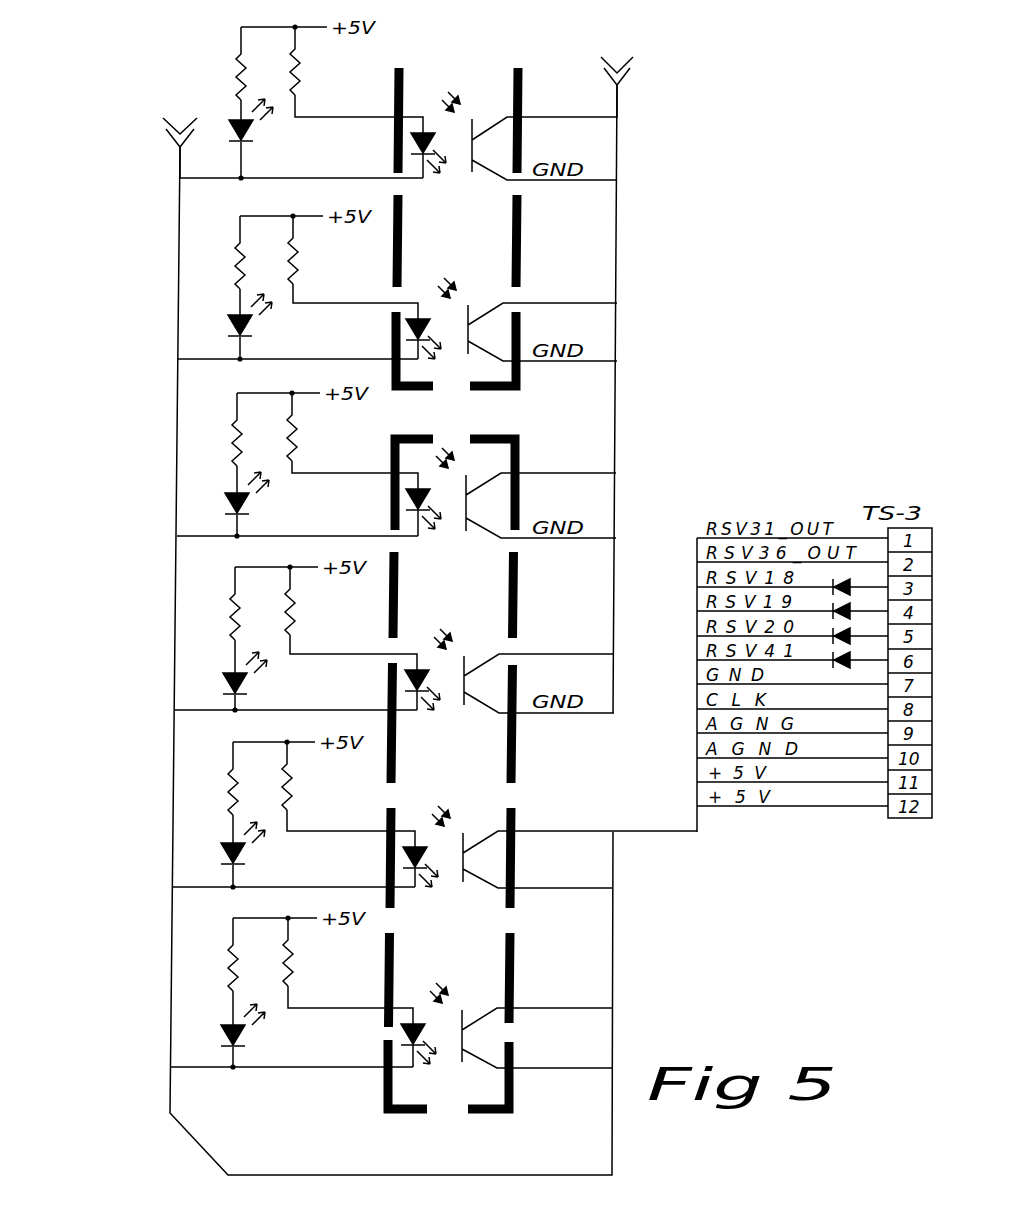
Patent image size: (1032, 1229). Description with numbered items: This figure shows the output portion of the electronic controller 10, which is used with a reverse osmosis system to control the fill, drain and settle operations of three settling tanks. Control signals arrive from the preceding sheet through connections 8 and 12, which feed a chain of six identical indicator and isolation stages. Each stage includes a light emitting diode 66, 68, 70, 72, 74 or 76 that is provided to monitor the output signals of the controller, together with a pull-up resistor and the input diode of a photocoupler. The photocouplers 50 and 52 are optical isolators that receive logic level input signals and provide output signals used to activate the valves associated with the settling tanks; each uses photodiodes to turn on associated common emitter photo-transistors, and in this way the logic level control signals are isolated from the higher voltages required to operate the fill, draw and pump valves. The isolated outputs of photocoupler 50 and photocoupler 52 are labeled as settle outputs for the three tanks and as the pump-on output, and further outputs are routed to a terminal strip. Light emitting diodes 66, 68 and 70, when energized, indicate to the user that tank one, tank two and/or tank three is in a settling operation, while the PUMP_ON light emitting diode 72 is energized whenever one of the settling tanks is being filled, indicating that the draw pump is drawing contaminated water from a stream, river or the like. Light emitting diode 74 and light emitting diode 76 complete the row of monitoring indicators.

The connector from FIG. 4 8 is at (128, 131).
The electronic controller 10 is at (688, 193).
The connector from FIG. 4 12 is at (710, 76).
The photocoupler 50 is at (522, 80).
The photocoupler 52 is at (520, 445).
The light emitting diode 66 is at (239, 124).
The light emitting diode 68 is at (237, 318).
The light emitting diode 70 is at (235, 496).
The PUMP_ON light emitting diode 72 is at (233, 676).
The light emitting diode 74 is at (232, 846).
The light emitting diode 76 is at (231, 1028).